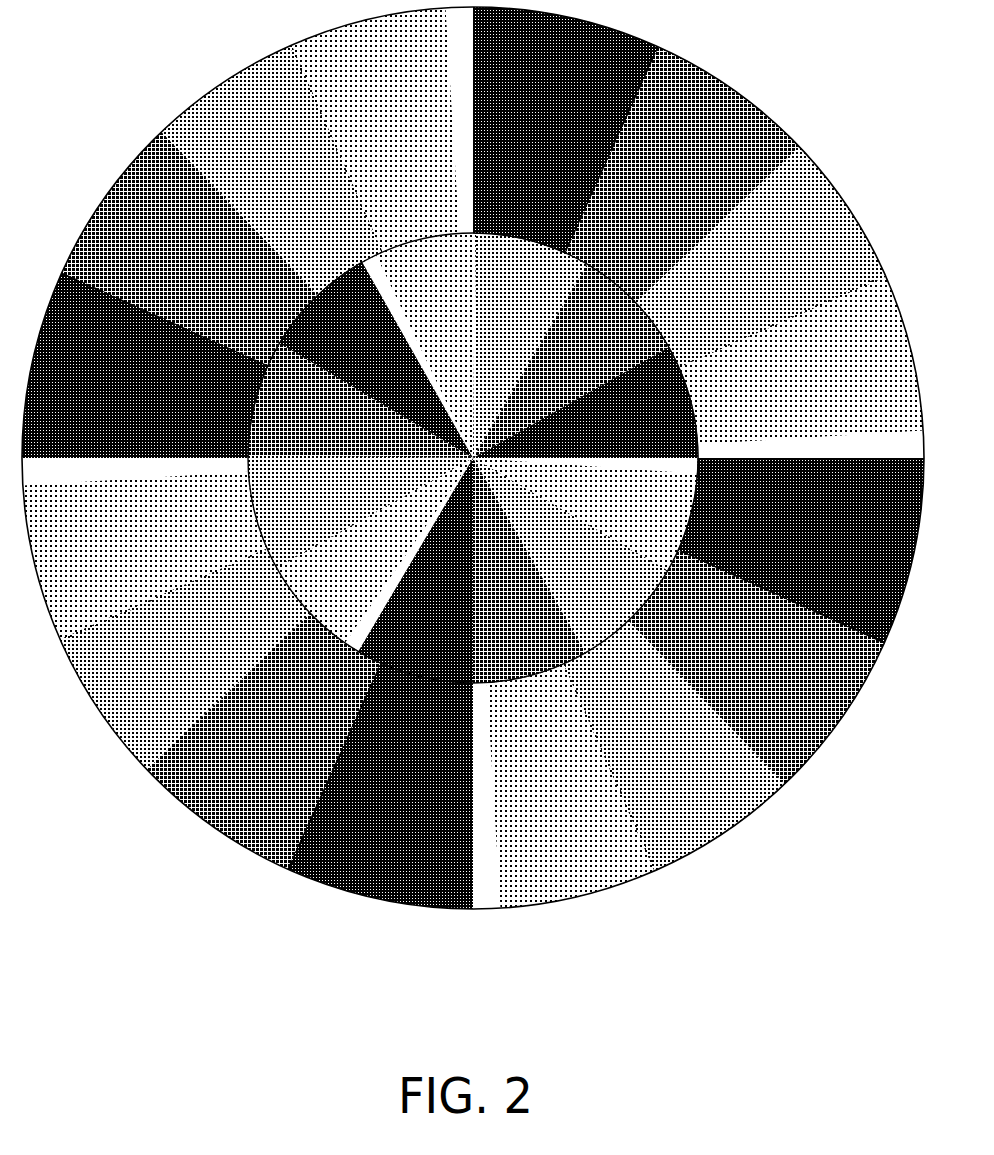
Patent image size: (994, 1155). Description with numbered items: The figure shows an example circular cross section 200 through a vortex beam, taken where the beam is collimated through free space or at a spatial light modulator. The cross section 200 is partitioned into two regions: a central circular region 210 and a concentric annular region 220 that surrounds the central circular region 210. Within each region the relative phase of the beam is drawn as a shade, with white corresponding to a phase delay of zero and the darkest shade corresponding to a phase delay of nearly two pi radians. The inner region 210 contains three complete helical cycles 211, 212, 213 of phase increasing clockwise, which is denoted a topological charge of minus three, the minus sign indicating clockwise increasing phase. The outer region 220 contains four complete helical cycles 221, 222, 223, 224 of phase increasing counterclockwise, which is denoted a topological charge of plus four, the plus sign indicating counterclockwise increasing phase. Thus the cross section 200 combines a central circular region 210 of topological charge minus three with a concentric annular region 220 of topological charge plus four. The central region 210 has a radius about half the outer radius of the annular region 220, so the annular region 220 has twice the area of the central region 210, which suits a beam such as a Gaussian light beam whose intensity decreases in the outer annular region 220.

The circular cross section 200 is at (50, 47).
The central circular region 210 is at (472, 457).
The complete helical cycle 211 is at (561, 585).
The complete helical cycle 212 is at (354, 470).
The complete helical cycle 213 is at (561, 360).
The concentric annular region 220 is at (473, 458).
The complete helical cycle 221 is at (723, 228).
The complete helical cycle 222 is at (257, 228).
The complete helical cycle 223 is at (252, 677).
The complete helical cycle 224 is at (737, 677).